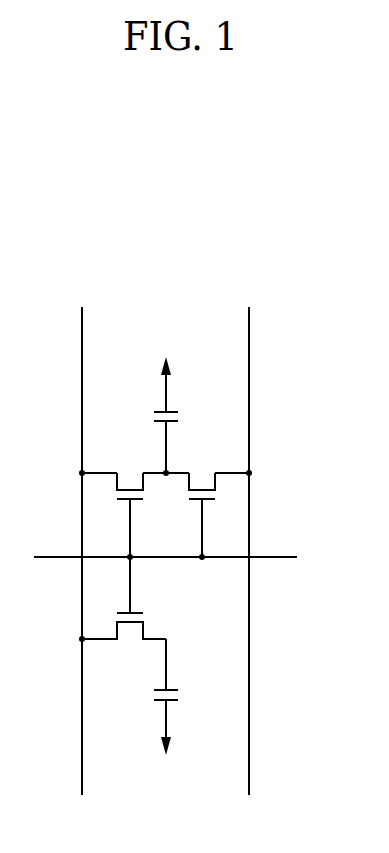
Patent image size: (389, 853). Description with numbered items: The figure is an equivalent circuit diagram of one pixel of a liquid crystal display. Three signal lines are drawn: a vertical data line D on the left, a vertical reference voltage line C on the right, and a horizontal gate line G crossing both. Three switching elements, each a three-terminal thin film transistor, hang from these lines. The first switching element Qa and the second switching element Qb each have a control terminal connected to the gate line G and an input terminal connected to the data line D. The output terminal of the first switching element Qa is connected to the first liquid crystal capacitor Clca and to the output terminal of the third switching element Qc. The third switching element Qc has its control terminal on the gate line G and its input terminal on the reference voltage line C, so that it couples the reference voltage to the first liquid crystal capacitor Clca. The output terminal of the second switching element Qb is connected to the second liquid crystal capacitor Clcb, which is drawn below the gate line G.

The data line D is at (83, 532).
The reference voltage line C is at (249, 532).
The gate line G is at (176, 558).
The first switching element Qa is at (130, 501).
The second switching element Qb is at (124, 611).
The third switching element Qc is at (202, 501).
The first liquid crystal capacitor Clca is at (189, 415).
The second liquid crystal capacitor Clcb is at (189, 697).